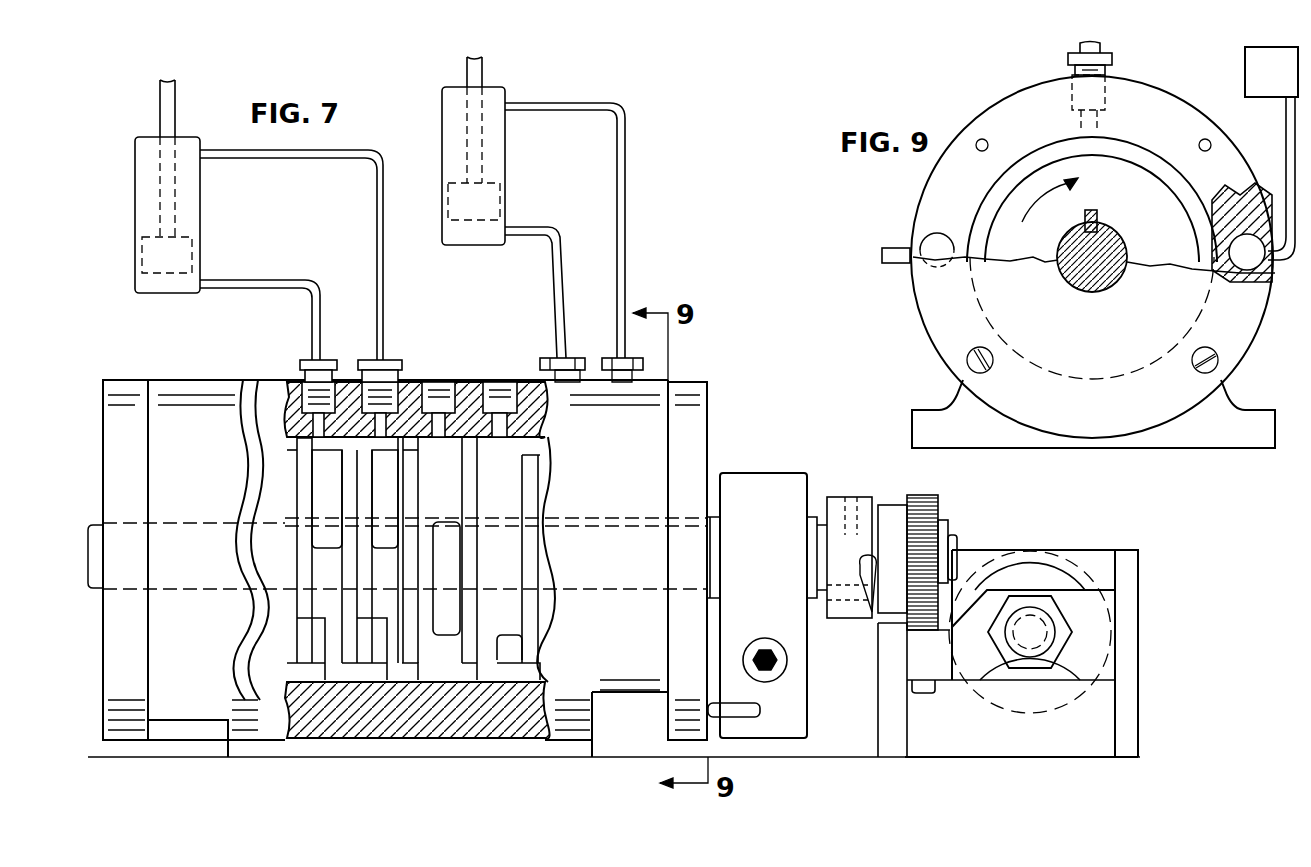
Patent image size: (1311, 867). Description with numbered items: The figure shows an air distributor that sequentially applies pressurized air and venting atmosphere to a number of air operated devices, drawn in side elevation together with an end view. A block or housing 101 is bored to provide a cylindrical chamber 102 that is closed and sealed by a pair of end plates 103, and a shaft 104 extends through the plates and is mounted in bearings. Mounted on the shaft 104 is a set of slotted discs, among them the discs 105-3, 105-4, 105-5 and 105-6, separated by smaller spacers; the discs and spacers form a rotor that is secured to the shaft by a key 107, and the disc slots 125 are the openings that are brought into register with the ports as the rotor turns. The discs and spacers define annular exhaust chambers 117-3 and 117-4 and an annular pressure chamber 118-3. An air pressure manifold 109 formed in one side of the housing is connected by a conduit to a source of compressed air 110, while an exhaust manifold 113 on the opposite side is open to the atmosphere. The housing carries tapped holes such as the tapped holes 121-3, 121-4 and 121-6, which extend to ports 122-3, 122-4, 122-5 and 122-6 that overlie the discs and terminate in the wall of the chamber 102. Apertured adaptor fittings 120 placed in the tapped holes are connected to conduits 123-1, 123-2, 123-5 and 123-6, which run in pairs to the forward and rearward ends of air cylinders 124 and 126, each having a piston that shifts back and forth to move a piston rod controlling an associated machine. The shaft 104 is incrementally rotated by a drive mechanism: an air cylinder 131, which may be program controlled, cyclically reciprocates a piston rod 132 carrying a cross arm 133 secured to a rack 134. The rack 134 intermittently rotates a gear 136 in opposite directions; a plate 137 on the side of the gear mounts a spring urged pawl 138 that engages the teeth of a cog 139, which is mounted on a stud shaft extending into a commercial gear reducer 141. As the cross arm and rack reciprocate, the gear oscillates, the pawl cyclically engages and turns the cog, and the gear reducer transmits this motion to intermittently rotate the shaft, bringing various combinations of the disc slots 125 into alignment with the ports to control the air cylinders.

In FIG. 7, the block 101 is at (198, 378).
In FIG. 9, the block 101 is at (988, 108).
In FIG. 7, the cylindrical chamber 102 is at (535, 432).
In FIG. 7, the end plates 103 is at (128, 378).
In FIG. 9, the end plates 103 is at (935, 322).
In FIG. 7, the shaft 104 is at (220, 590).
In FIG. 9, the shaft 104 is at (1118, 238).
In FIG. 7, the disc 105-3 is at (515, 682).
In FIG. 7, the disc 105-4 is at (455, 682).
In FIG. 7, the disc 105-5 is at (345, 682).
In FIG. 7, the disc 105-6 is at (300, 682).
In FIG. 7, the key 107 is at (220, 520).
In FIG. 9, the key 107 is at (1094, 210).
In FIG. 9, the air pressure manifold 109 is at (1255, 268).
In FIG. 9, the source of compressed air 110 is at (1245, 68).
In FIG. 9, the exhaust manifold 113 is at (940, 240).
In FIG. 7, the annular exhaust chamber 117-3 is at (410, 437).
In FIG. 7, the annular exhaust chamber 117-4 is at (290, 447).
In FIG. 7, the annular pressure chamber 118-3 is at (325, 440).
In FIG. 7, the adaptor fittings 120 is at (605, 370).
In FIG. 9, the adaptor fittings 120 is at (1068, 58).
In FIG. 7, the tapped hole 121-3 is at (503, 385).
In FIG. 7, the tapped hole 121-4 is at (437, 385).
In FIG. 7, the tapped hole 121-6 is at (308, 372).
In FIG. 7, the port 122-3 is at (488, 385).
In FIG. 7, the port 122-4 is at (432, 382).
In FIG. 7, the port 122-5 is at (345, 365).
In FIG. 7, the port 122-6 is at (293, 385).
In FIG. 7, the conduit 123-1 is at (585, 103).
In FIG. 7, the conduit 123-2 is at (537, 227).
In FIG. 7, the conduit 123-5 is at (375, 183).
In FIG. 7, the conduit 123-6 is at (265, 280).
In FIG. 7, the air cylinder 124 is at (505, 150).
In FIG. 7, the piston slot 125 is at (317, 625).
In FIG. 7, the air cylinder 126 is at (200, 213).
In FIG. 7, the air cylinder 131 is at (1085, 695).
In FIG. 7, the piston rod 132 is at (1030, 620).
In FIG. 7, the cross arm 133 is at (1110, 640).
In FIG. 7, the rack 134 is at (915, 640).
In FIG. 7, the gear 136 is at (935, 500).
In FIG. 7, the plate 137 is at (885, 505).
In FIG. 7, the pawl 138 is at (862, 580).
In FIG. 7, the cog 139 is at (865, 497).
In FIG. 7, the gear reducer 141 is at (762, 473).